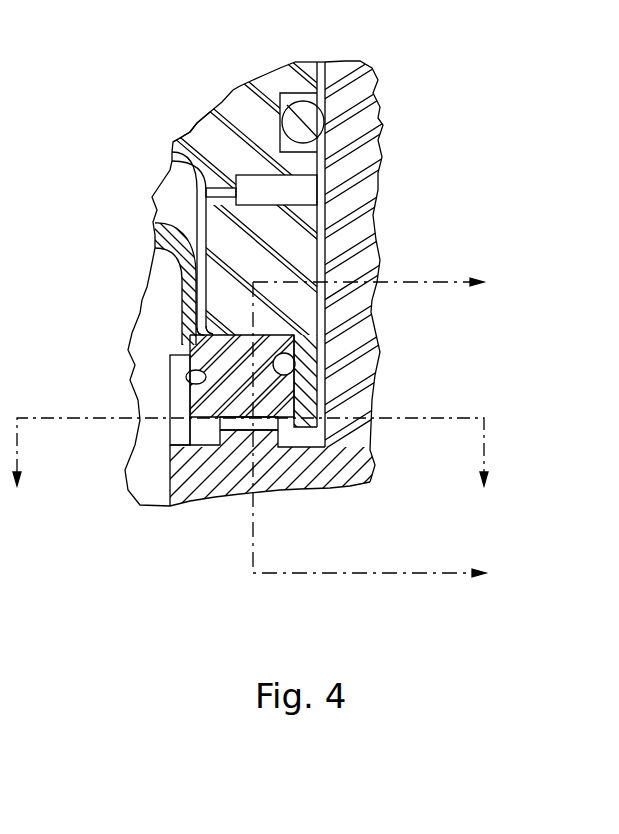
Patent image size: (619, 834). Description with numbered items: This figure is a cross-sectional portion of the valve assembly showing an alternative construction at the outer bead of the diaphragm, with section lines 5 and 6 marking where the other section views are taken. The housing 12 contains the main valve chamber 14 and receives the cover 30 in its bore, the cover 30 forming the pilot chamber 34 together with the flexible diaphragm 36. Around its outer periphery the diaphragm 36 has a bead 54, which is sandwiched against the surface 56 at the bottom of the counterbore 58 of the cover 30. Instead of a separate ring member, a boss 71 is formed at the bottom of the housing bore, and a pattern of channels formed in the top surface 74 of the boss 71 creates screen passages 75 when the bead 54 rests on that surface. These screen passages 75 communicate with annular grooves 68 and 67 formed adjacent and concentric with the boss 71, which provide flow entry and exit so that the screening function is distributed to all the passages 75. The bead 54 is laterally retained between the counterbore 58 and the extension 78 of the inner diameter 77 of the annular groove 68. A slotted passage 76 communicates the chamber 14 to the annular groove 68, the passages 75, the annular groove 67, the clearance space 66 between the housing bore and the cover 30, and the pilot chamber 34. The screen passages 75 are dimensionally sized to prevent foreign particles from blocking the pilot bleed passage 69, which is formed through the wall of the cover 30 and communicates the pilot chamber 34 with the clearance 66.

The housing 12 is at (377, 440).
The main valve chamber 14 is at (140, 478).
The cover 30 is at (230, 102).
The pilot chamber 34 is at (168, 195).
The flexible diaphragm 36 is at (170, 240).
The bead 54 is at (230, 402).
The surface 56 is at (279, 333).
The counterbore 58 is at (305, 400).
The clearance 66 is at (376, 312).
The annular groove 67 is at (306, 440).
The annular groove 68 is at (192, 447).
The pilot bleed passage 69 is at (193, 138).
The boss 71 is at (258, 437).
The top surface 74 is at (216, 445).
The screen passages 75 is at (298, 390).
The slotted passage 76 is at (178, 425).
The inner diameter 77 is at (190, 382).
The extension 78 is at (190, 348).
The section line 5- 5 is at (379, 426).
The section line 6- 6 is at (250, 463).